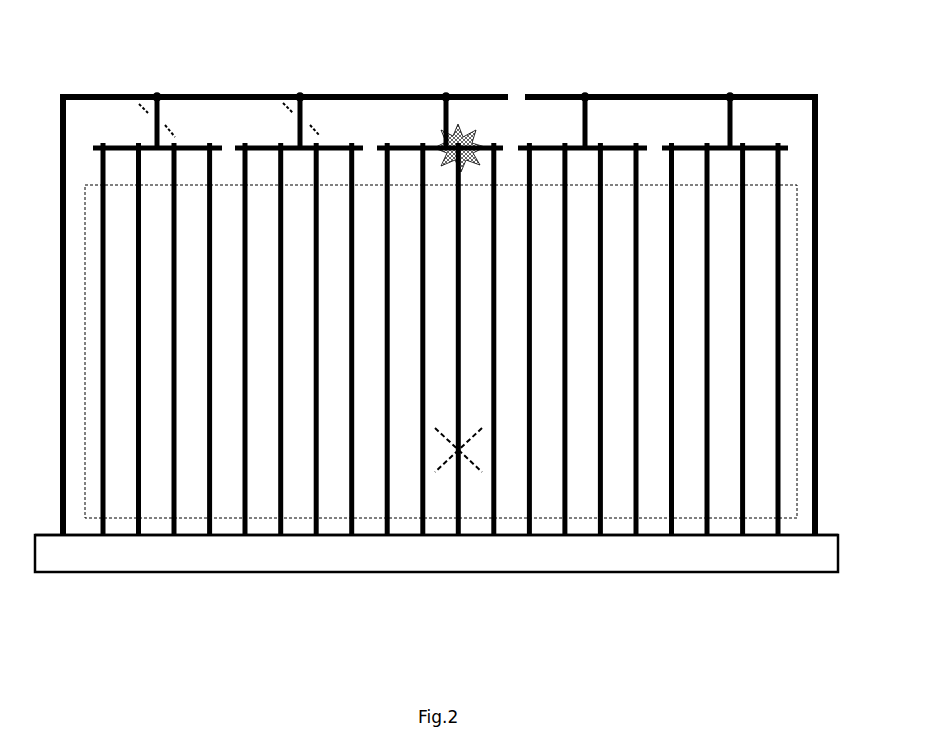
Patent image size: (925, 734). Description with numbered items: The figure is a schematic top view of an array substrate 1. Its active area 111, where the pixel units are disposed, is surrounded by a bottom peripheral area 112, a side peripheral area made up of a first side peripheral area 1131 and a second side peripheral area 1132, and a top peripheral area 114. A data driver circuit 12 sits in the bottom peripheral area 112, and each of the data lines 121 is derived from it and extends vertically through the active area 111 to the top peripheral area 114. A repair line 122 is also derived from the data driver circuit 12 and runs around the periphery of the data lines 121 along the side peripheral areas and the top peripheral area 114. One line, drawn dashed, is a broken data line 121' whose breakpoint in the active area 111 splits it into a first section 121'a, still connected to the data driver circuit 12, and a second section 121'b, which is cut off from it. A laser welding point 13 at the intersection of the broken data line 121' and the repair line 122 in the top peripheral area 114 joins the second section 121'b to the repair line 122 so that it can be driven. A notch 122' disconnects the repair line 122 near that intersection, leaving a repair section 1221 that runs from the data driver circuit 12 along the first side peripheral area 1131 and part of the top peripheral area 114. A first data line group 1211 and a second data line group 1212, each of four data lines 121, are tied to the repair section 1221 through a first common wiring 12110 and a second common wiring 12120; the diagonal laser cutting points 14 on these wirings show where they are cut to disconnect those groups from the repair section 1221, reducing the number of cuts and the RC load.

The array substrate 1 is at (826, 86).
The data driver circuit 12 is at (800, 574).
The laser welding point 13 is at (466, 125).
The laser cutting points 14 is at (177, 95).
The active area 111 is at (797, 330).
The bottom peripheral area 112 is at (242, 583).
The top peripheral area 114 is at (650, 92).
The data lines 121 is at (480, 339).
The repair line 122 is at (441, 316).
The notch 122' is at (544, 63).
The first side peripheral area 1131 is at (59, 355).
The second side peripheral area 1132 is at (828, 230).
The first data line group 1211 is at (122, 142).
The second data line group 1212 is at (265, 142).
The repair section 1221 is at (74, 94).
The first common wiring 12110 is at (157, 95).
The second common wiring 12120 is at (300, 95).
The broken data line 121' is at (466, 406).
The first section 121'a is at (438, 529).
The second section 121'b is at (496, 387).